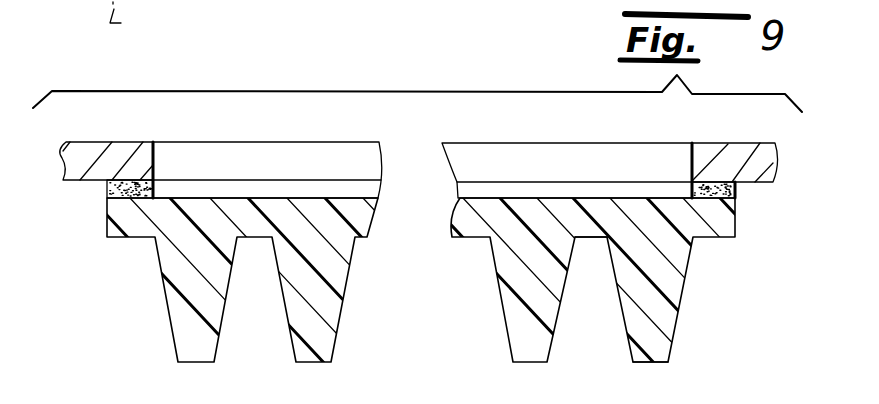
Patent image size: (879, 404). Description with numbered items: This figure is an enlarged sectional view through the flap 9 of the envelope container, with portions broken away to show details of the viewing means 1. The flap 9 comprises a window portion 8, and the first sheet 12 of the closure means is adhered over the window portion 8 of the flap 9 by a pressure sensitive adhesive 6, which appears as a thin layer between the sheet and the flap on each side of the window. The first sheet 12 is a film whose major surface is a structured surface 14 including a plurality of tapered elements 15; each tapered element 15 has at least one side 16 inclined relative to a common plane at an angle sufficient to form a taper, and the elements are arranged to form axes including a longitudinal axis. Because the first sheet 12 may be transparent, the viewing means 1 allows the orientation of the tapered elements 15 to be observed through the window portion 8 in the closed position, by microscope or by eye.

The viewing means 1 is at (310, 131).
The pressure sensitive adhesive 6 is at (107, 188).
The window portion 8 is at (158, 152).
The flap 9 is at (740, 143).
The first sheet 12 is at (726, 239).
The structured surface 14 is at (490, 333).
The tapered element 15 is at (310, 351).
The side 16 is at (625, 325).